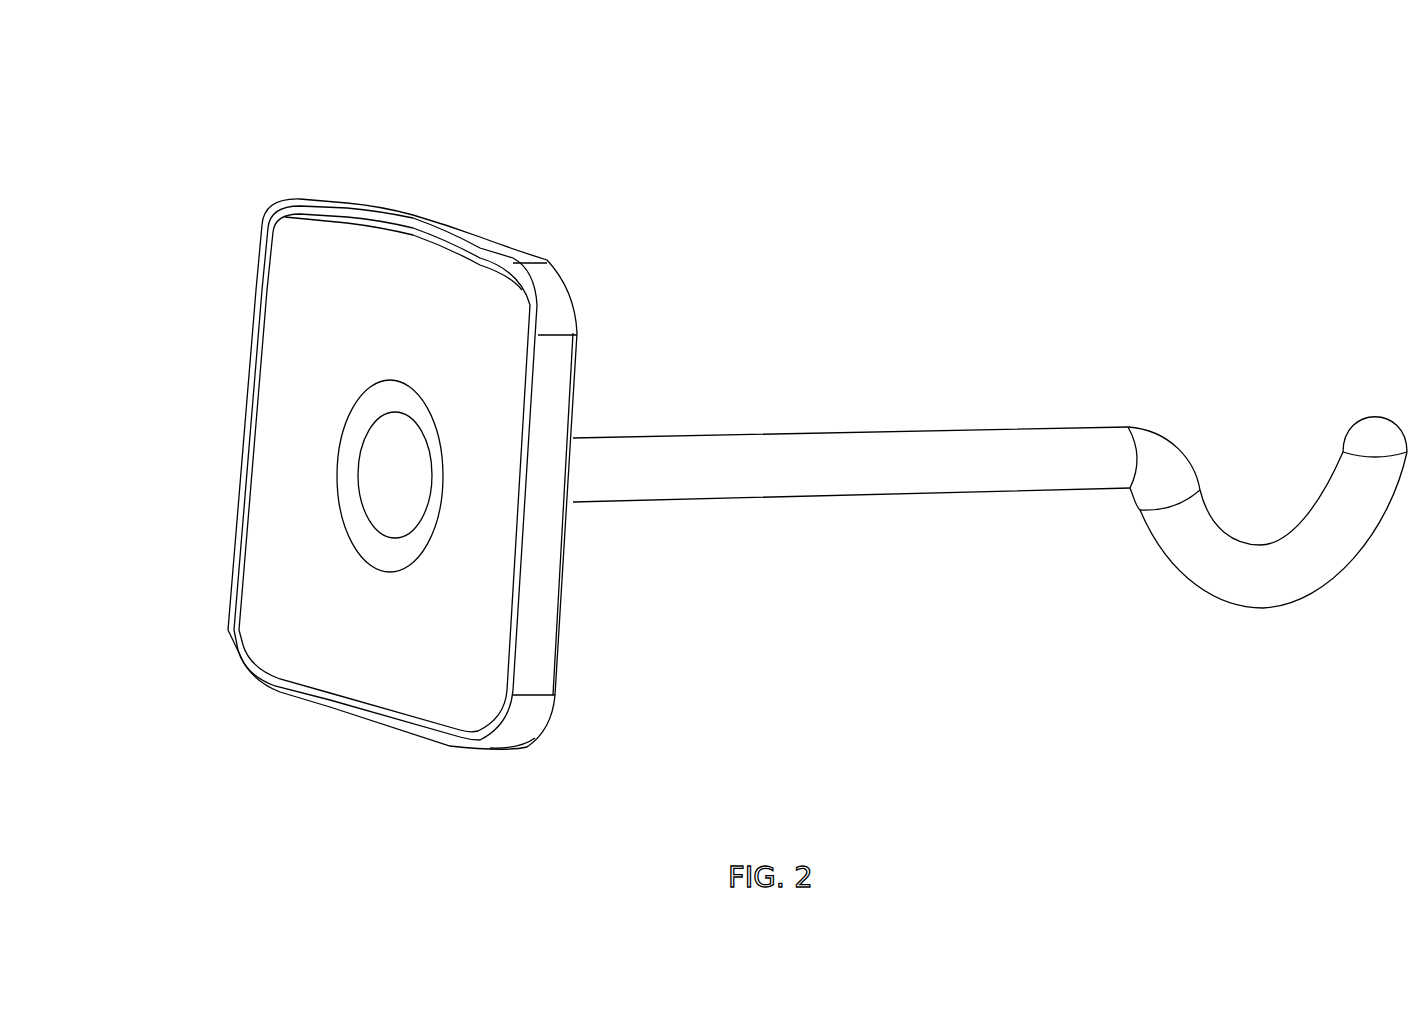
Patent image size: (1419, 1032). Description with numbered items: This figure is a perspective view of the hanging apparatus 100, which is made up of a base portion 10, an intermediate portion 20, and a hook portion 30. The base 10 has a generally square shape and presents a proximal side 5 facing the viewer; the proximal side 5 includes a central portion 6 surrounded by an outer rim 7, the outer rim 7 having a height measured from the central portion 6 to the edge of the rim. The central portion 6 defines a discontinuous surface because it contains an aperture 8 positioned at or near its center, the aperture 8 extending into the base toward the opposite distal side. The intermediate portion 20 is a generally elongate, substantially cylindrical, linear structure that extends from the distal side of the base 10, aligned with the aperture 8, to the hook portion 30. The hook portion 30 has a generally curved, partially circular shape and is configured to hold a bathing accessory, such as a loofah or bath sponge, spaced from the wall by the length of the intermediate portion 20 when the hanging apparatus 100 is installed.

The hanging apparatus 100 is at (766, 464).
The base portion 10 is at (379, 496).
The proximal side 5 is at (330, 290).
The central portion 6 is at (270, 548).
The outer rim 7 is at (248, 658).
The aperture 8 is at (363, 453).
The intermediate portion 20 is at (809, 293).
The hook portion 30 is at (1307, 338).